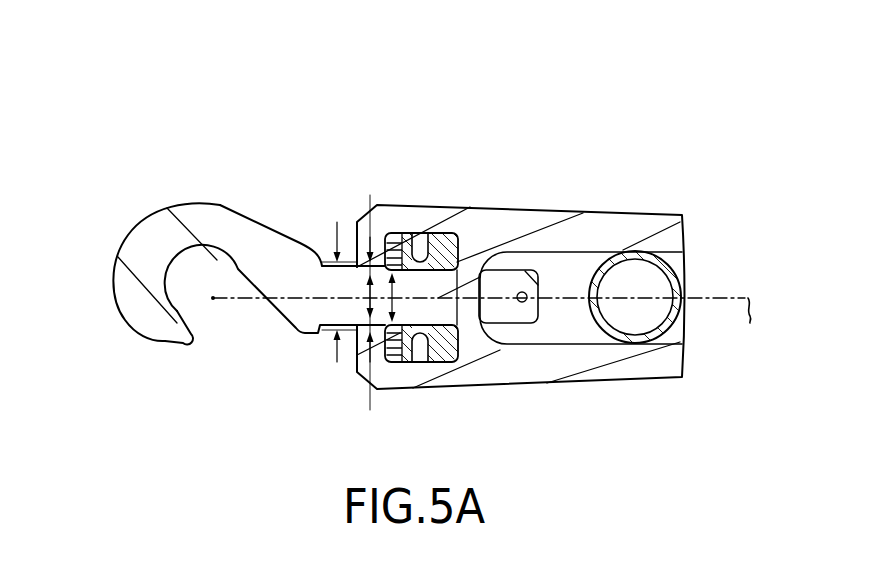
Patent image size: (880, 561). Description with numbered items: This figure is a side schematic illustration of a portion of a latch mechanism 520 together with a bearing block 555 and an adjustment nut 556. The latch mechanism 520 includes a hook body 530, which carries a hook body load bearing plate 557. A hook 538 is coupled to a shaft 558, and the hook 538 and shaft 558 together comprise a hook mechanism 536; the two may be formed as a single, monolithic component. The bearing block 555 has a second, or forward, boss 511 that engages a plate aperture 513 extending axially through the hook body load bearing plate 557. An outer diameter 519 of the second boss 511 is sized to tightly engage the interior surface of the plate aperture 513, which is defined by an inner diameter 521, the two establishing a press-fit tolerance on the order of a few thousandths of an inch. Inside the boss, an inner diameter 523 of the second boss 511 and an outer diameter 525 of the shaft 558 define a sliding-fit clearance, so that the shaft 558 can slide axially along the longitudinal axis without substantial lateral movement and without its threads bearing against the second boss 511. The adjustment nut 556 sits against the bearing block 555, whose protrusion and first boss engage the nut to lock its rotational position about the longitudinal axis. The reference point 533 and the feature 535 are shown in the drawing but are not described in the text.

The latch mechanism 520 is at (170, 120).
The hook 538 is at (125, 243).
The hook mechanism 536 is at (150, 349).
The center point / axis 533 is at (213, 300).
The second boss 511 is at (353, 267).
The outer diameter of the second boss 519 is at (337, 362).
The plate aperture 513 is at (357, 222).
The inner diameter of the plate aperture 521 is at (368, 403).
The inner diameter of the second boss 523 is at (368, 300).
The outer diameter of the shaft 525 is at (394, 295).
The hook body 530 is at (535, 377).
The pivot bore 535 is at (636, 297).
The adjustment nut 556 is at (430, 240).
The hook body load bearing plate 557 is at (356, 368).
The bearing block 555 is at (392, 362).
The shaft 558 is at (428, 312).